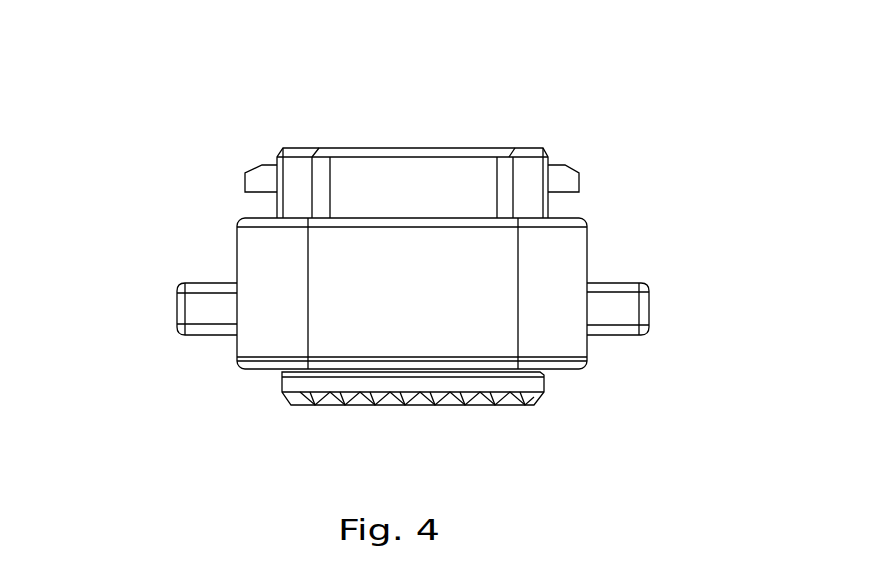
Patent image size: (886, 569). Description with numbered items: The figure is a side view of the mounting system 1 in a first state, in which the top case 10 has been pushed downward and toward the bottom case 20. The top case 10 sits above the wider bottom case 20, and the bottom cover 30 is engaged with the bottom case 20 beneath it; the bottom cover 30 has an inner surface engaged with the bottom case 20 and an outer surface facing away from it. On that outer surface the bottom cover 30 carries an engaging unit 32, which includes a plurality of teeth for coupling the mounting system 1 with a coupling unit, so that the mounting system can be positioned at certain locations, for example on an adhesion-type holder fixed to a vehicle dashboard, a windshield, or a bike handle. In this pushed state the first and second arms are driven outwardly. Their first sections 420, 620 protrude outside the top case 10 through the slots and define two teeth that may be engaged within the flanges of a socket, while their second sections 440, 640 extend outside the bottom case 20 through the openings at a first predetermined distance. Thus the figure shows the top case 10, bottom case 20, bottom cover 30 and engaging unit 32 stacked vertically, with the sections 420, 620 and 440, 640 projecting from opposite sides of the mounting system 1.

The mounting system 1 is at (587, 107).
The top case 10 is at (549, 155).
The bottom case 20 is at (237, 345).
The bottom cover 30 is at (586, 366).
The engaging unit 32 is at (543, 383).
The first section of the first arm 420 is at (245, 180).
The first section of the second arm 620 is at (580, 180).
The second section of the first arm 440 is at (176, 315).
The second section of the second arm 640 is at (650, 305).